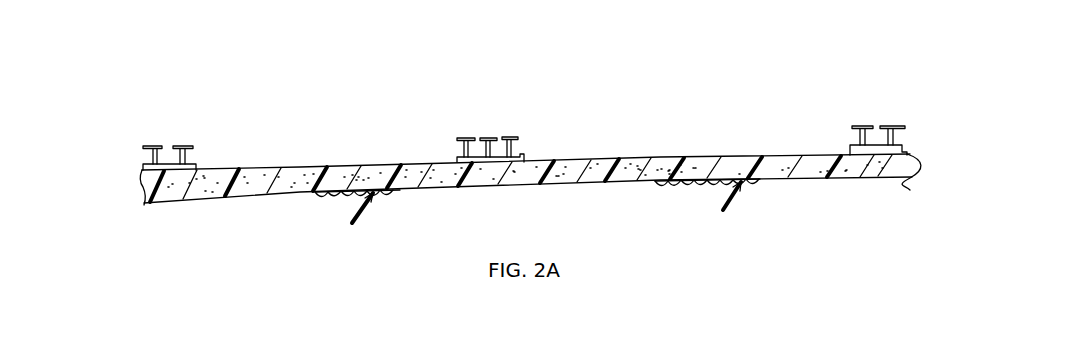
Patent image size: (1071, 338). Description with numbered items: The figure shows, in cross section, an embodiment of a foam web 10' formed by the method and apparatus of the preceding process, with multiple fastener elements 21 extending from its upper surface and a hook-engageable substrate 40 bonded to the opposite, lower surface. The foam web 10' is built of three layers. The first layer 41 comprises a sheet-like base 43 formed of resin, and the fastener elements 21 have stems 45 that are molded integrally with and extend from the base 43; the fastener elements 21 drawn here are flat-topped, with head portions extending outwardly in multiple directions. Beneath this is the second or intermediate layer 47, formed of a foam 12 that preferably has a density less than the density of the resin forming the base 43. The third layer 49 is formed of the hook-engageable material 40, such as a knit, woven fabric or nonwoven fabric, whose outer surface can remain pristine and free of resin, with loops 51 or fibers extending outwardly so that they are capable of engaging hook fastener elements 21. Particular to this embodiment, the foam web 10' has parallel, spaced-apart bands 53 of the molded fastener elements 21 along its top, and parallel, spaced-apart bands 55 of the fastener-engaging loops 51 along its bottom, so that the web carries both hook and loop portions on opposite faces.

The foam web 10' is at (474, 142).
The foam 12 is at (654, 170).
The fastener elements 21 is at (178, 144).
The hook-engageable substrate 40 is at (534, 217).
The first layer 41 is at (127, 170).
The sheet-like base 43 is at (198, 165).
The stems 45 is at (462, 157).
The second or intermediate layer 47 is at (126, 190).
The third layer 49 is at (294, 202).
The loops 51 is at (397, 192).
The bands of molded fastener elements 53 is at (534, 146).
The bands of fastener-engaging loops 55 is at (315, 215).